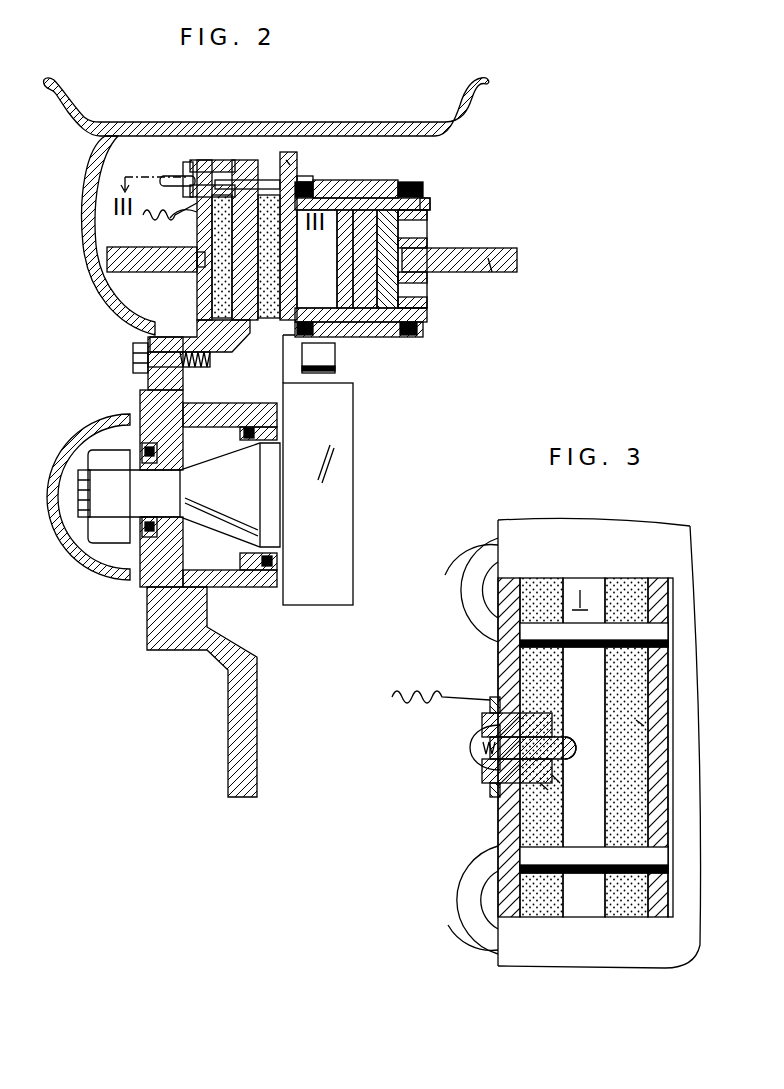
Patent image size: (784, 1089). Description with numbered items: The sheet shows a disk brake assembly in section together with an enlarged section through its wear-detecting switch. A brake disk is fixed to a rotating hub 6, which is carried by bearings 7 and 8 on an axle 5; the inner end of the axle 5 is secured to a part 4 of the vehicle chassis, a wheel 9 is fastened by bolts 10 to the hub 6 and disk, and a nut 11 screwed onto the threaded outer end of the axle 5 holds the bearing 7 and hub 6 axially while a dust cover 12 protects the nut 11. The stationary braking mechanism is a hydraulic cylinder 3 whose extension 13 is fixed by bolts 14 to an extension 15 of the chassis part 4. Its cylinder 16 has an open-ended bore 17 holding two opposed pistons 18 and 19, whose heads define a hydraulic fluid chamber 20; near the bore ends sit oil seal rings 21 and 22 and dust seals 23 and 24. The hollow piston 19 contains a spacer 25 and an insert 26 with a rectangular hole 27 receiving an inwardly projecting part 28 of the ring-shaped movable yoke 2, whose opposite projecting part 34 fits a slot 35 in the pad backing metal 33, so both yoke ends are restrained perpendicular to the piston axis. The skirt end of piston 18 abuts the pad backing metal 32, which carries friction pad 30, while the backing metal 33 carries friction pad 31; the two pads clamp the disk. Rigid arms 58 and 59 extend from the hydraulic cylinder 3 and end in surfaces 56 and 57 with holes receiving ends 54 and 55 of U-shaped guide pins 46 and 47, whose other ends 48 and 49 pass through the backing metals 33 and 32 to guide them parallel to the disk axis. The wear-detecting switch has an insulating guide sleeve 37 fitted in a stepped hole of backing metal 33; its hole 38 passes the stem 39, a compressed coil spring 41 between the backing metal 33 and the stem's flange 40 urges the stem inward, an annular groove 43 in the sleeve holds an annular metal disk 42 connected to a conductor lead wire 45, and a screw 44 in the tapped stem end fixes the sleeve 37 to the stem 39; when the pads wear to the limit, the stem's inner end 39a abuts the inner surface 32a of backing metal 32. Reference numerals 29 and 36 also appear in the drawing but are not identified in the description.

In FIG. 2, the movable yoke 2 is at (511, 281).
In FIG. 2, the hydraulic cylinder 3 is at (373, 174).
In FIG. 3, the hydraulic cylinder 3 is at (494, 521).
In FIG. 2, the chassis part 4 is at (346, 556).
In FIG. 2, the axle 5 is at (218, 512).
In FIG. 2, the hub 6 is at (140, 415).
In FIG. 2, the bearing 7 is at (157, 452).
In FIG. 2, the bearing 8 is at (239, 437).
In FIG. 2, the wheel 9 is at (92, 284).
In FIG. 2, the bolts 10 is at (133, 358).
In FIG. 2, the nut 11 is at (100, 460).
In FIG. 2, the dust cover 12 is at (72, 530).
In FIG. 2, the extension 13 is at (333, 372).
In FIG. 2, the bolts 14 is at (345, 340).
In FIG. 2, the extension 15 is at (283, 372).
In FIG. 2, the cylinder 16 is at (362, 182).
In FIG. 2, the bore 17 is at (385, 182).
In FIG. 2, the piston 18 is at (336, 182).
In FIG. 2, the piston 19 is at (430, 200).
In FIG. 2, the hydraulic fluid chamber 20 is at (352, 266).
In FIG. 2, the oil seal ring 21 is at (307, 182).
In FIG. 2, the oil seal ring 22 is at (408, 182).
In FIG. 2, the dust seal 23 is at (305, 178).
In FIG. 2, the dust seal 24 is at (425, 185).
In FIG. 2, the spacer 25 is at (427, 303).
In FIG. 2, the insert 26 is at (427, 216).
In FIG. 2, the rectangular hole 27 is at (427, 243).
In FIG. 2, the inwardly projecting part 28 is at (427, 278).
In FIG. 2, the shaft groove 29 is at (490, 274).
In FIG. 2, the friction pad 30 is at (270, 325).
In FIG. 3, the friction pad 30 is at (620, 918).
In FIG. 2, the friction pad 31 is at (221, 330).
In FIG. 3, the friction pad 31 is at (540, 918).
In FIG. 2, the pad backing metal 32 is at (290, 185).
In FIG. 3, the pad backing metal 32 is at (662, 918).
In FIG. 2, the inner surface 32a is at (287, 160).
In FIG. 3, the inner surface 32a is at (644, 724).
In FIG. 2, the pad backing metal 33 is at (207, 290).
In FIG. 3, the pad backing metal 33 is at (505, 893).
In FIG. 2, the inwardly projecting part 34 is at (197, 264).
In FIG. 2, the slot 35 is at (181, 220).
In FIG. 2, the lever 36 is at (107, 258).
In FIG. 2, the guide sleeve 37 is at (185, 162).
In FIG. 3, the guide sleeve 37 is at (482, 777).
In FIG. 3, the hole 38 is at (560, 737).
In FIG. 3, the stem 39 is at (574, 763).
In FIG. 3, the extreme inner end 39a is at (556, 783).
In FIG. 3, the flange 40 is at (540, 785).
In FIG. 2, the compressed coil spring 41 is at (205, 185).
In FIG. 3, the compressed coil spring 41 is at (528, 783).
In FIG. 2, the annular metal disk 42 is at (198, 160).
In FIG. 3, the annular metal disk 42 is at (492, 697).
In FIG. 3, the annular groove 43 is at (492, 793).
In FIG. 2, the screw 44 is at (182, 174).
In FIG. 3, the screw 44 is at (482, 742).
In FIG. 2, the conductor lead wire 45 is at (143, 218).
In FIG. 3, the conductor lead wire 45 is at (388, 690).
In FIG. 2, the guide pin 46 is at (262, 180).
In FIG. 3, the guide pin 46 is at (452, 605).
In FIG. 3, the guide pin 47 is at (457, 868).
In FIG. 3, the other end of guide pin 48 is at (628, 640).
In FIG. 3, the other end of guide pin 49 is at (660, 858).
In FIG. 3, the end of guide pin 54 is at (462, 555).
In FIG. 3, the end of guide pin 55 is at (466, 950).
In FIG. 3, the surface 56 is at (465, 577).
In FIG. 3, the surface 57 is at (462, 928).
In FIG. 2, the rigid arm 58 is at (245, 160).
In FIG. 3, the rigid arm 58 is at (590, 520).
In FIG. 3, the rigid arm 59 is at (567, 968).